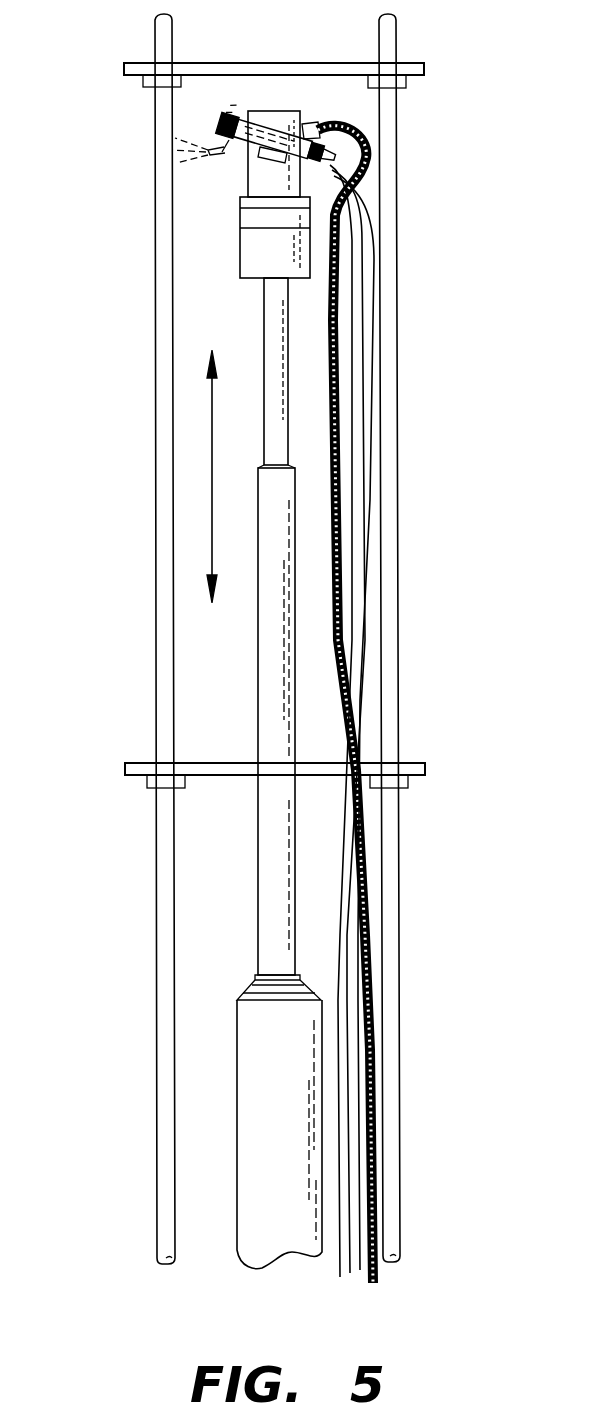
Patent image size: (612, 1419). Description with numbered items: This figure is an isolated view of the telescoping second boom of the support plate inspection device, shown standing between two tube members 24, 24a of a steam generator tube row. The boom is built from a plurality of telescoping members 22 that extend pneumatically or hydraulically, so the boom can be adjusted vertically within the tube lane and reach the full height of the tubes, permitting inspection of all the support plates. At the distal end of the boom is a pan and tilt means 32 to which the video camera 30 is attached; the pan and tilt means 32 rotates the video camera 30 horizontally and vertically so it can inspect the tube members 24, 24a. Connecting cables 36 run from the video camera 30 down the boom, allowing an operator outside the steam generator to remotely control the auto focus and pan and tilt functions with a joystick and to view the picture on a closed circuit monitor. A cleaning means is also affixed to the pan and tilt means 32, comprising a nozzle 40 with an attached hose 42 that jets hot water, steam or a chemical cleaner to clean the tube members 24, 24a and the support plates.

The telescoping members 22 is at (275, 337).
The tube member 24 is at (396, 50).
The tube member 24a is at (155, 53).
The video camera 30 is at (287, 111).
The pan and tilt means 32 is at (268, 111).
The connecting cables 36 is at (362, 265).
The nozzle 40 is at (242, 158).
The hose 42 is at (363, 135).